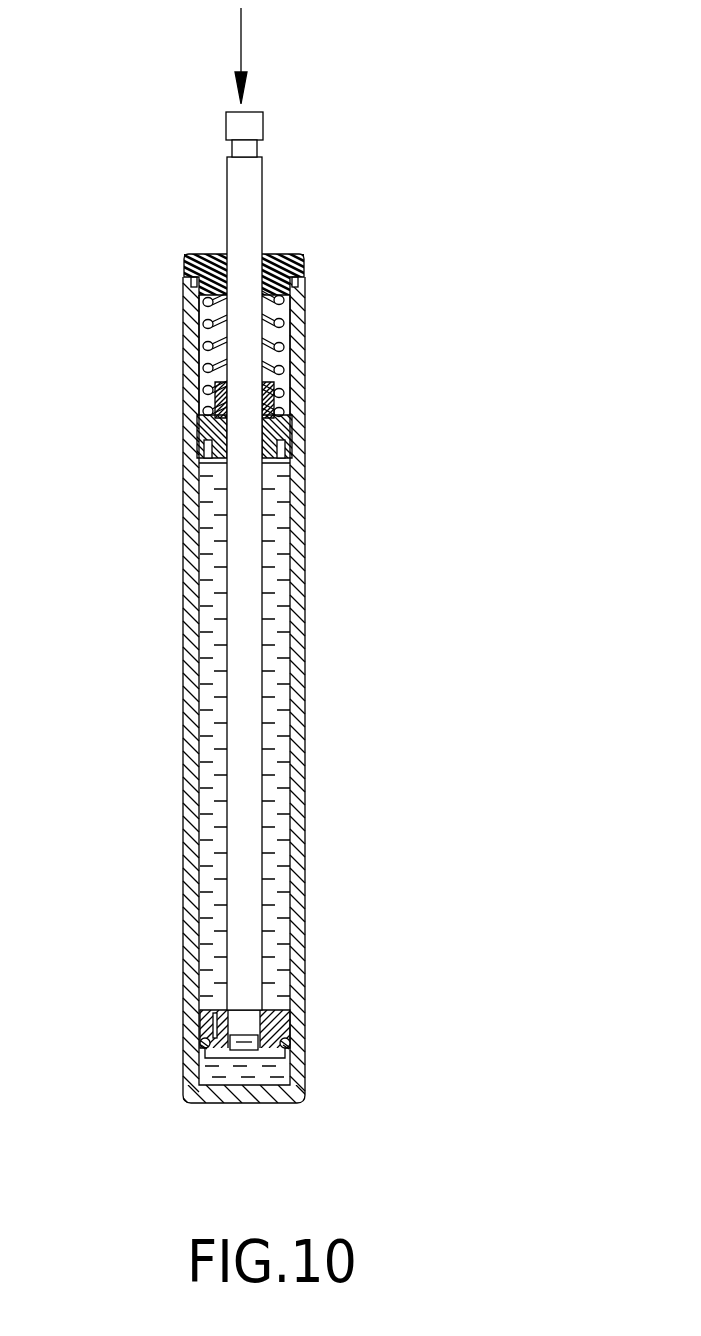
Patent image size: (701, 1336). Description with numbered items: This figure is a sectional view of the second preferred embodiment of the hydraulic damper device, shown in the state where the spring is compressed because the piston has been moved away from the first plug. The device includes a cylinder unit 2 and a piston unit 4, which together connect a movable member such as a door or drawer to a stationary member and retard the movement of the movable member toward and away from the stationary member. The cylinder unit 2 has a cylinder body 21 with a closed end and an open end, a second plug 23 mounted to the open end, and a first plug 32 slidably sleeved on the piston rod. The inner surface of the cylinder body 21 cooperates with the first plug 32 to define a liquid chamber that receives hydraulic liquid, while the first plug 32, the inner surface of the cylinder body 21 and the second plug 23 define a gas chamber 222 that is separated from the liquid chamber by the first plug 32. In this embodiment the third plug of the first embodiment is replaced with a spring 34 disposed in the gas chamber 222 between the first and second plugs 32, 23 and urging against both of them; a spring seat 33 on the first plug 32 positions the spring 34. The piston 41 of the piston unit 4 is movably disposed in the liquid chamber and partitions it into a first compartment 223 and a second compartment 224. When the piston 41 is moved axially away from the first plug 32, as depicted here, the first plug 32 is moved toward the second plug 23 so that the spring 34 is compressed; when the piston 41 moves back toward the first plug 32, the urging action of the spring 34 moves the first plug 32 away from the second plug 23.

The cylinder unit 2 is at (240, 673).
The piston unit 4 is at (274, 215).
The cylinder body 21 is at (305, 738).
The second plug 23 is at (278, 257).
The first plug 32 is at (287, 438).
The spring seat 33 is at (217, 397).
The spring 34 is at (218, 318).
The piston 41 is at (297, 1014).
The gas chamber 222 is at (207, 355).
The first compartment 223 is at (273, 600).
The second compartment 224 is at (270, 1070).